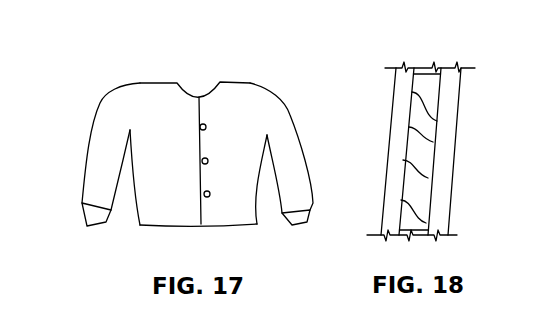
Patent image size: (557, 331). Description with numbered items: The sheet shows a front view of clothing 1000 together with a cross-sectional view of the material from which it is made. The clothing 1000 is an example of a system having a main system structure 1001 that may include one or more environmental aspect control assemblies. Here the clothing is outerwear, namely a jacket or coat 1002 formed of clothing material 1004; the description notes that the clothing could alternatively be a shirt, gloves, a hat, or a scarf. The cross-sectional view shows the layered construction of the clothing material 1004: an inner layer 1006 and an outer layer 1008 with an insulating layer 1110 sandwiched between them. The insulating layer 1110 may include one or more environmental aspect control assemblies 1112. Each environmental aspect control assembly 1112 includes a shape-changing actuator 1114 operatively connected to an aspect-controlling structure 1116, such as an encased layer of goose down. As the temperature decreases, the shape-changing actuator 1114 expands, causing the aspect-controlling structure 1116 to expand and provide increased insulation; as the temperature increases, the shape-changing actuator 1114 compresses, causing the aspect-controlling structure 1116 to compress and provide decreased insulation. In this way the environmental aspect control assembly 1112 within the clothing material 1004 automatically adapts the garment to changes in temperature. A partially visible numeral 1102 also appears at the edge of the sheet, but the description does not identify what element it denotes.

In FIG. 17, the clothing 1000 is at (104, 90).
In FIG. 17, the main system structure 1001 is at (152, 78).
In FIG. 17, the jacket or coat 1002 is at (278, 107).
In FIG. 17, the clothing material 1004 is at (265, 126).
In FIG. 18, the clothing material 1004 is at (493, 57).
In FIG. 18, the inner layer 1006 is at (449, 208).
In FIG. 18, the outer layer 1008 is at (381, 214).
In FIG. 18, the insulating layer 1110 is at (435, 85).
In FIG. 18, the environmental aspect control assembly 1112 is at (432, 124).
In FIG. 18, the shape-changing actuator 1114 is at (428, 138).
In FIG. 18, the aspect-controlling structure 1116 is at (422, 167).
In FIG. 18, the layered material 1102 is at (553, 97).